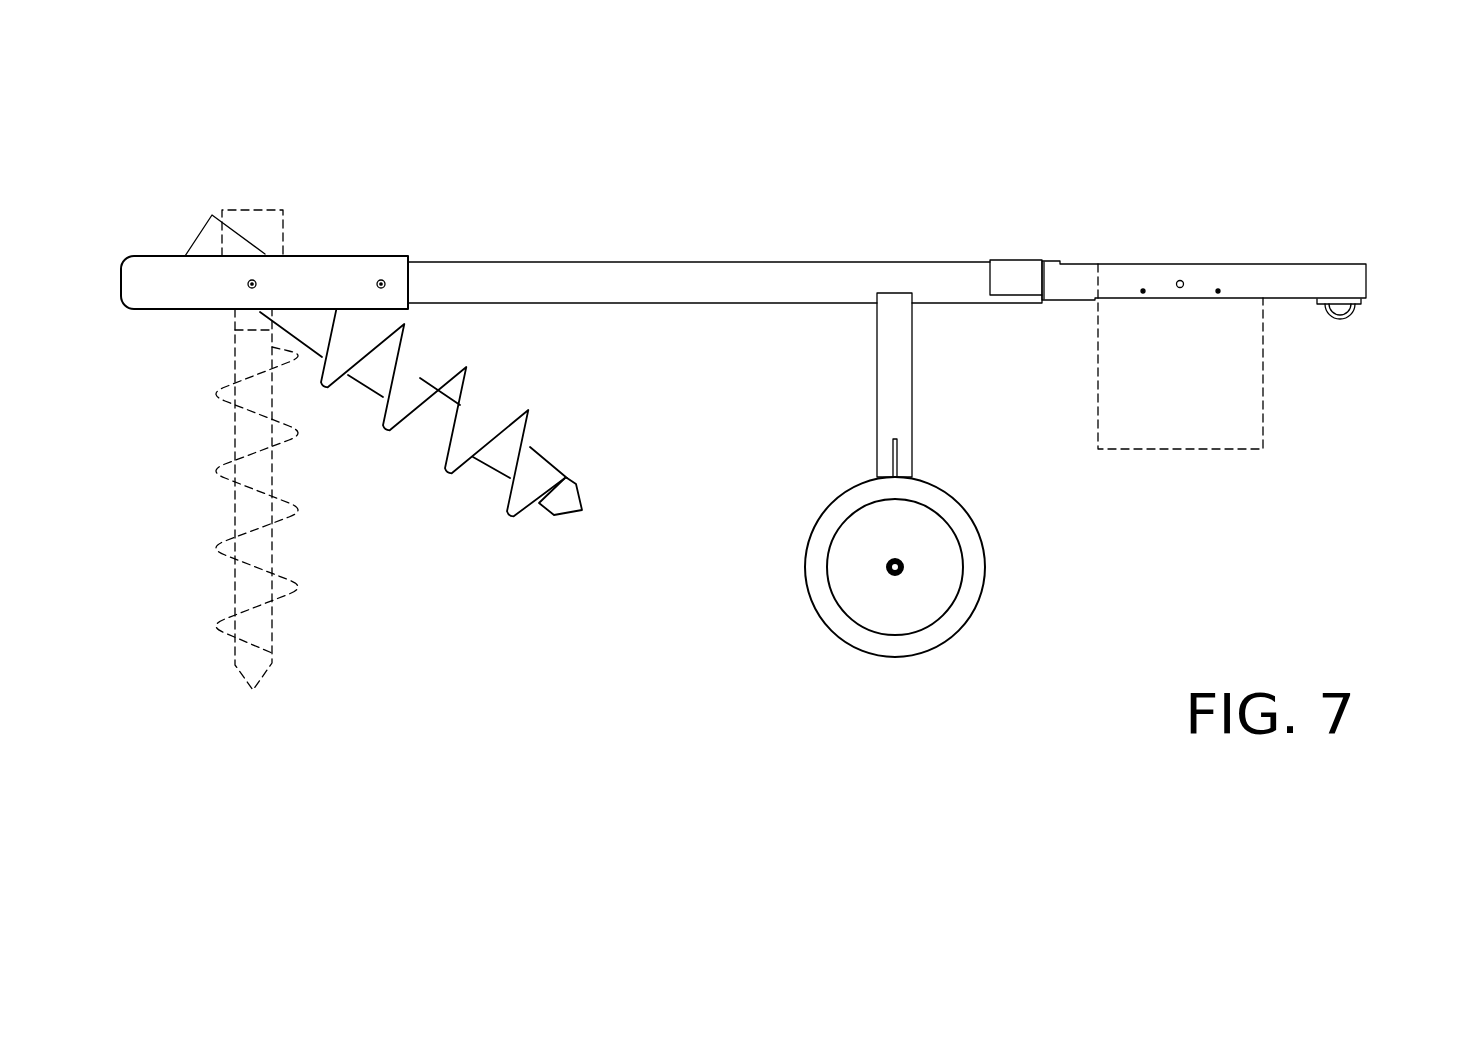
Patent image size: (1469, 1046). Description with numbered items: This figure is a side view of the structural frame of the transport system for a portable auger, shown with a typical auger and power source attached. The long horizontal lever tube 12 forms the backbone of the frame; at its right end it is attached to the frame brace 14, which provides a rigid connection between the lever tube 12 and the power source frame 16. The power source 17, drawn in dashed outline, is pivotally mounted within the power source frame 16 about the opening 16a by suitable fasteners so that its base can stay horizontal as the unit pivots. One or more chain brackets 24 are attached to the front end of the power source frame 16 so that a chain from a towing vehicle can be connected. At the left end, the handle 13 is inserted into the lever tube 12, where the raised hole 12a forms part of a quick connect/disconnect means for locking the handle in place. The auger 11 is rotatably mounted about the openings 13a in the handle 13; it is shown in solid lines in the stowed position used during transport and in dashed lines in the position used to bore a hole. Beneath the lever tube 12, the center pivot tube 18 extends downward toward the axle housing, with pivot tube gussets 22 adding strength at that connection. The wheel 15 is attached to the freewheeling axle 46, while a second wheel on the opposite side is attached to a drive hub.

The auger 11 is at (473, 430).
The lever tube 12 is at (652, 270).
The raised hole 12a is at (383, 278).
The handle 13 is at (160, 272).
The openings 13a is at (258, 284).
The frame brace 14 is at (1022, 269).
The wheel 15 is at (950, 618).
The power source frame 16 is at (1287, 282).
The opening 16a is at (1180, 282).
The power source 17 is at (1240, 411).
The center pivot tube 18 is at (897, 359).
The pivot tube gussets 22 is at (897, 455).
The chain brackets 24 is at (1357, 312).
The freewheeling axle 46 is at (903, 565).